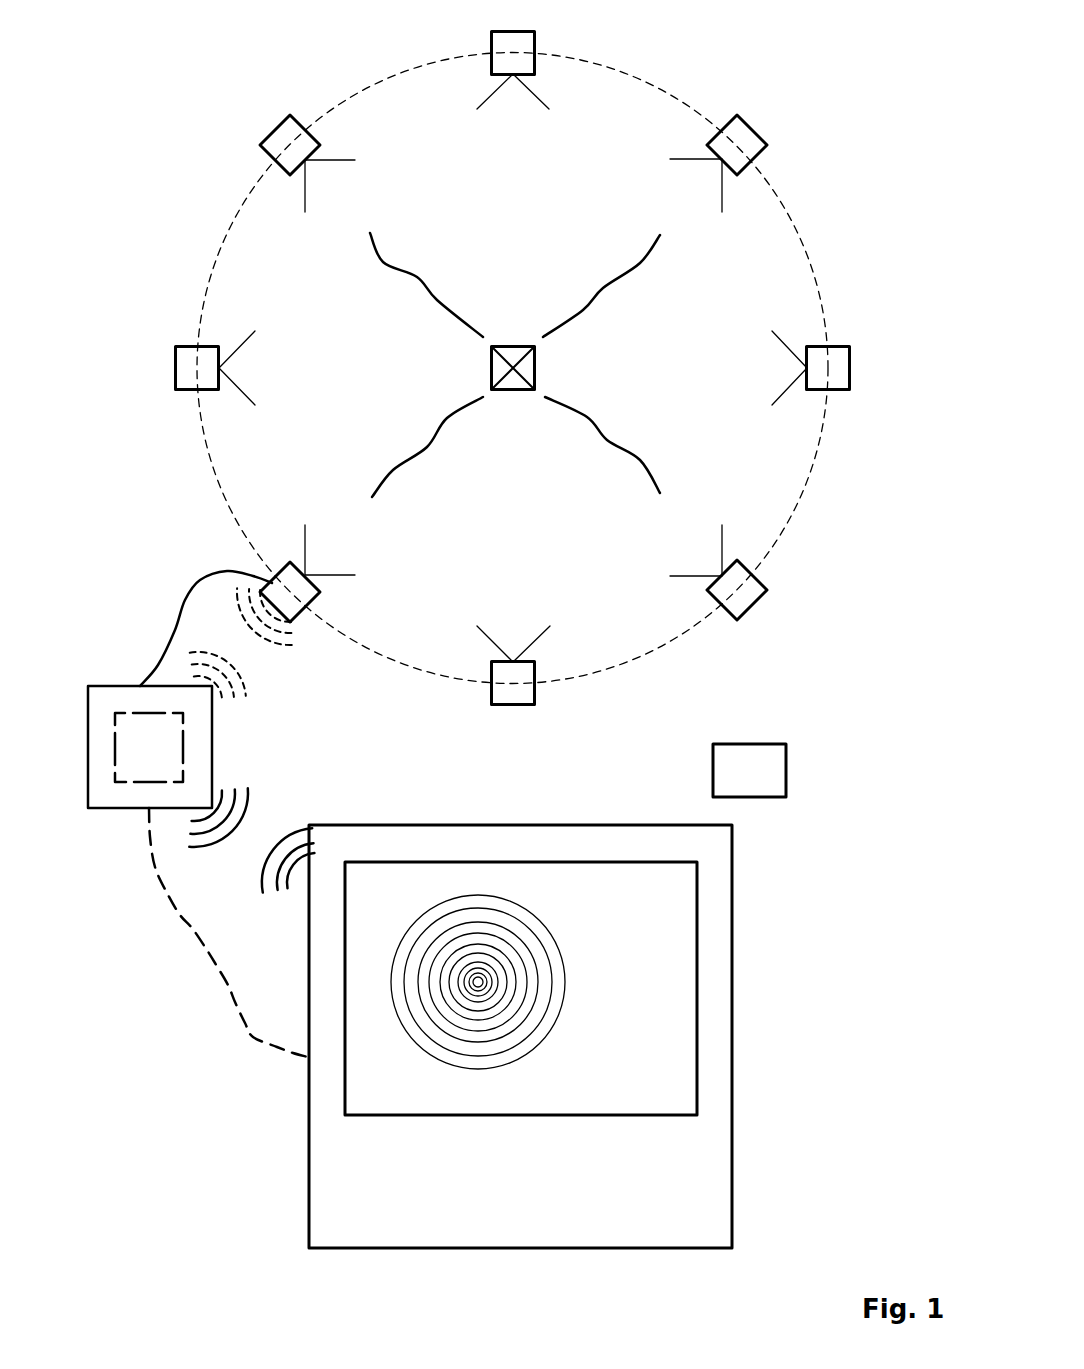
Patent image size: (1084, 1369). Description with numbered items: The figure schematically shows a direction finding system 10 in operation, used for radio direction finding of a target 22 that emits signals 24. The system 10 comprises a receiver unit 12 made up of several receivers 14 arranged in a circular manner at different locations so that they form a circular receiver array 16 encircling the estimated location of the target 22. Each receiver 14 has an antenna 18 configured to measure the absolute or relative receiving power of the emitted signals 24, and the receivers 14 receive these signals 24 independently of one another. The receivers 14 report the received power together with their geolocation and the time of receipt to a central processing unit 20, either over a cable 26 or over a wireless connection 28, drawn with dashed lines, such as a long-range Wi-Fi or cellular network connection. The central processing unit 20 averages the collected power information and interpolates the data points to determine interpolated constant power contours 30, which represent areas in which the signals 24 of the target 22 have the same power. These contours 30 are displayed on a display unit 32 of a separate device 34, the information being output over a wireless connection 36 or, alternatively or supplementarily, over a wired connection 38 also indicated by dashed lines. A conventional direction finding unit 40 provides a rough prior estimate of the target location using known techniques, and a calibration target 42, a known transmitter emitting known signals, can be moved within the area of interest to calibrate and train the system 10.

The direction finding system 10 is at (183, 112).
The receiver unit 12 is at (200, 236).
The receivers 14 is at (283, 138).
The receiver array 16 is at (196, 453).
The antenna 18 is at (305, 192).
The central processing unit 20 is at (212, 722).
The target 22 is at (513, 346).
The signals 24 is at (383, 262).
The cable 26 is at (183, 610).
The wireless connection 28 is at (280, 683).
The interpolated constant power contours 30 is at (536, 916).
The display unit 32 is at (115, 747).
The separate device 34 is at (732, 835).
The wireless connection 36 is at (284, 810).
The wired connection 38 is at (172, 903).
The conventional direction finding unit 40 is at (770, 770).
The calibration target 42 is at (548, 377).